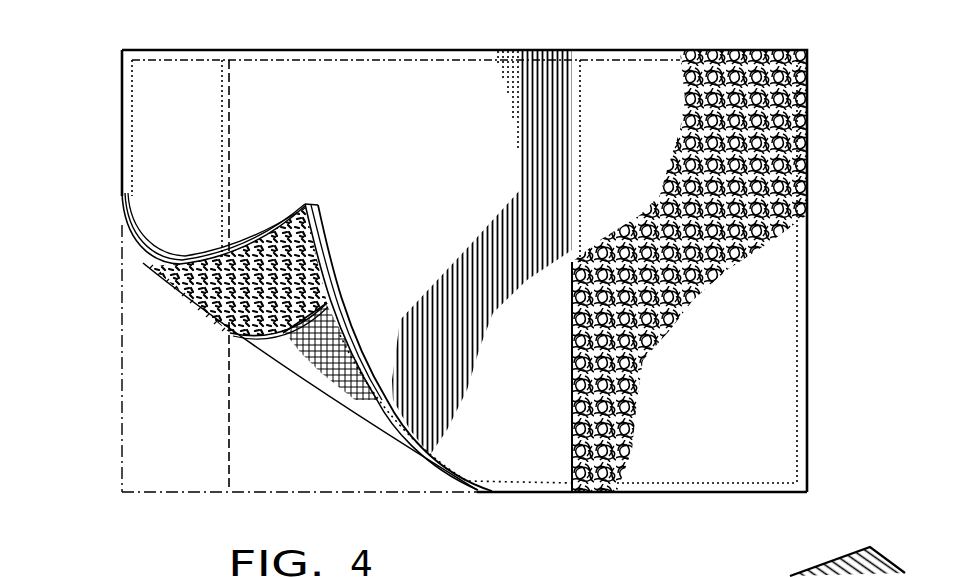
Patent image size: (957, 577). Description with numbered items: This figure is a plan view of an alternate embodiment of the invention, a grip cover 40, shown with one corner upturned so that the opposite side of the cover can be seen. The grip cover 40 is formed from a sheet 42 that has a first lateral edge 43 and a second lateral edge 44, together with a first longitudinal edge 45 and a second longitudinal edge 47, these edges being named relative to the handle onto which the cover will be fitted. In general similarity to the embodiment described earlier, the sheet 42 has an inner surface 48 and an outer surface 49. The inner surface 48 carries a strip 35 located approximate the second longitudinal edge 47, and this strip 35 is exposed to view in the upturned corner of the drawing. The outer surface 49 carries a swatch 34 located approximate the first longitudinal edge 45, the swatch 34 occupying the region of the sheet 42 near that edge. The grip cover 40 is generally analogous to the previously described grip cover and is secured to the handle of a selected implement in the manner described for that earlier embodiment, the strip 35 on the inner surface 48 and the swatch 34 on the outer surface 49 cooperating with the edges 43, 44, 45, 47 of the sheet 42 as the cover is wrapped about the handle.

The swatch 34 is at (787, 332).
The strip 35 is at (203, 318).
The grip cover 40 is at (523, 500).
The sheet 42 is at (391, 69).
The first lateral edge 43 is at (645, 53).
The second lateral edge 44 is at (667, 493).
The first longitudinal edge 45 is at (807, 192).
The second longitudinal edge 47 is at (122, 110).
The inner surface 48 is at (347, 397).
The outer surface 49 is at (507, 62).